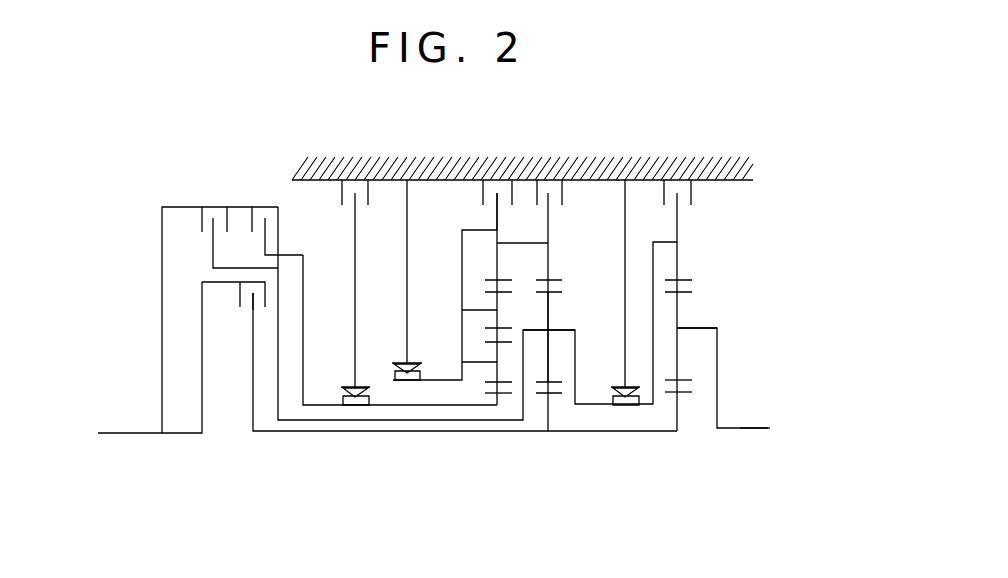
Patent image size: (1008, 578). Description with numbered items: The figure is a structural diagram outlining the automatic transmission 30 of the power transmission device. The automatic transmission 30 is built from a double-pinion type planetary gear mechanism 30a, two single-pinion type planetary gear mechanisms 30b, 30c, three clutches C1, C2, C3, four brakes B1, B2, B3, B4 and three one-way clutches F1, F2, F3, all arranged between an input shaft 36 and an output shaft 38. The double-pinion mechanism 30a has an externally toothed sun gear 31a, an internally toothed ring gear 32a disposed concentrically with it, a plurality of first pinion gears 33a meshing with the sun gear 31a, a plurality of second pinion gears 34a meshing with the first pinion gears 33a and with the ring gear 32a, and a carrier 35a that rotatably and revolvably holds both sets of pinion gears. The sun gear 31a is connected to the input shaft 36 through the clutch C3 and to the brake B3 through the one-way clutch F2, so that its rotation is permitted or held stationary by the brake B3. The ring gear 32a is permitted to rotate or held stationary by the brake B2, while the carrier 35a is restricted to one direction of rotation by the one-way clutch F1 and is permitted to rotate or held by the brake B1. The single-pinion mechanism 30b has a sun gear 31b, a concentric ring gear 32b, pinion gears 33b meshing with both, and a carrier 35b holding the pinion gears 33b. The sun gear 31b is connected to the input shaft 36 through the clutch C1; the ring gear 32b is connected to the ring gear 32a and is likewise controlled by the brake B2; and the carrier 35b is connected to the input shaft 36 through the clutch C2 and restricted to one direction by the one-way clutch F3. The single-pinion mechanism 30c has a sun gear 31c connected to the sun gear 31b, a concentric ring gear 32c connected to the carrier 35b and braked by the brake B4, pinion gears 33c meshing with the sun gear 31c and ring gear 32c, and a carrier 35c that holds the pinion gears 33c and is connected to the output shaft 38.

The automatic transmission 30 is at (124, 182).
The double-pinion type planetary gear mechanism 30a is at (477, 253).
The single-pinion type planetary gear mechanism 30b is at (579, 243).
The single-pinion type planetary gear mechanism 30c is at (689, 239).
The sun gear 31a is at (490, 394).
The sun gear 31b is at (545, 394).
The sun gear 31c is at (670, 395).
The ring gear 32a is at (486, 279).
The ring gear 32b is at (554, 278).
The ring gear 32c is at (683, 278).
The first pinion gears 33a is at (486, 368).
The pinion gears 33b is at (551, 304).
The pinion gears 33c is at (678, 307).
The second pinion gears 34a is at (492, 318).
The carrier 35a is at (484, 310).
The carrier 35b is at (558, 330).
The carrier 35c is at (700, 327).
The input shaft 36 is at (137, 436).
The output shaft 38 is at (745, 430).
The brake B1 is at (482, 187).
The brake B2 is at (536, 187).
The brake B3 is at (341, 187).
The brake B4 is at (663, 187).
The clutch C1 is at (240, 295).
The clutch C2 is at (202, 205).
The clutch C3 is at (268, 205).
The one-way clutch F1 is at (392, 380).
The one-way clutch F2 is at (337, 398).
The one-way clutch F3 is at (611, 400).